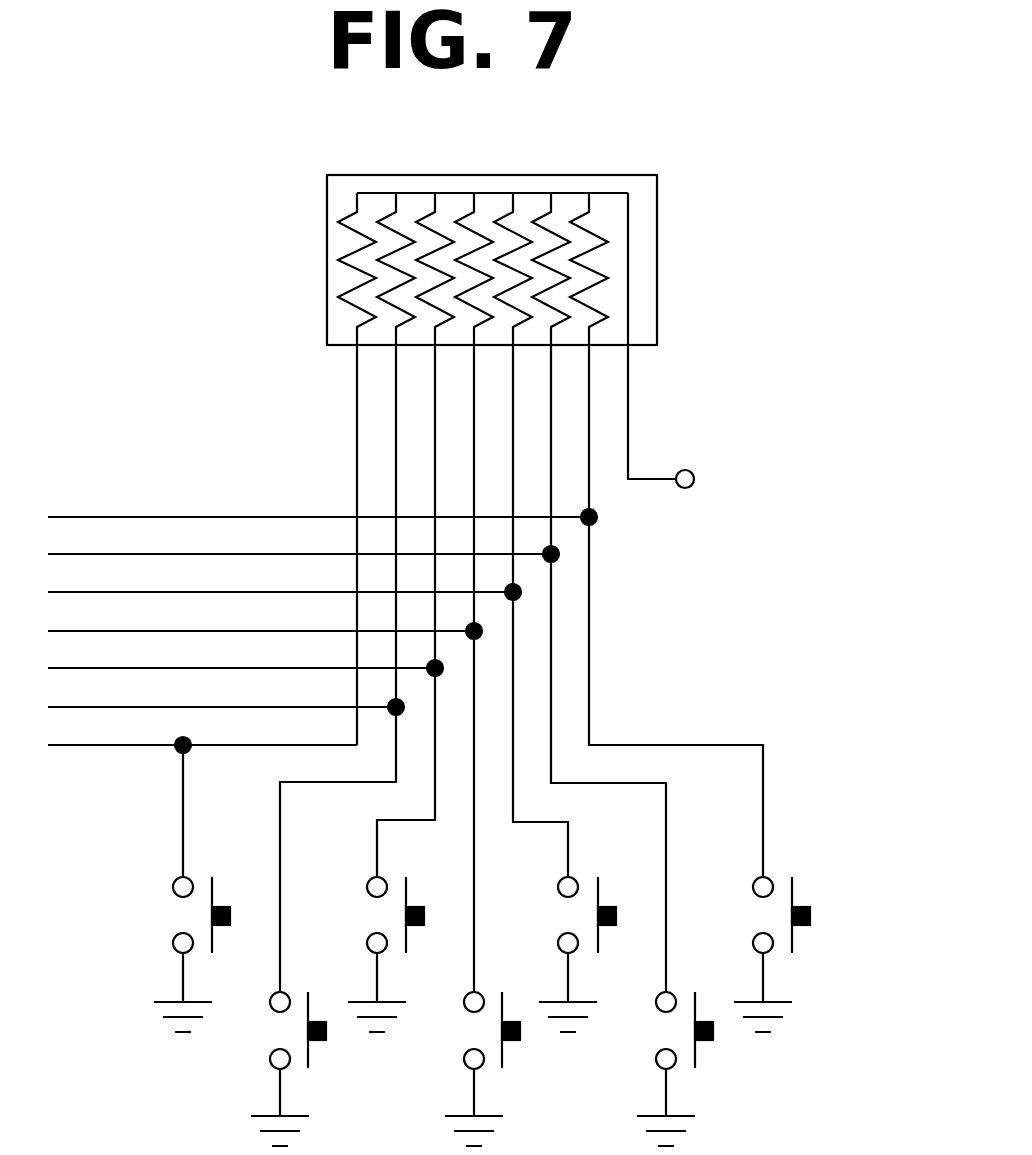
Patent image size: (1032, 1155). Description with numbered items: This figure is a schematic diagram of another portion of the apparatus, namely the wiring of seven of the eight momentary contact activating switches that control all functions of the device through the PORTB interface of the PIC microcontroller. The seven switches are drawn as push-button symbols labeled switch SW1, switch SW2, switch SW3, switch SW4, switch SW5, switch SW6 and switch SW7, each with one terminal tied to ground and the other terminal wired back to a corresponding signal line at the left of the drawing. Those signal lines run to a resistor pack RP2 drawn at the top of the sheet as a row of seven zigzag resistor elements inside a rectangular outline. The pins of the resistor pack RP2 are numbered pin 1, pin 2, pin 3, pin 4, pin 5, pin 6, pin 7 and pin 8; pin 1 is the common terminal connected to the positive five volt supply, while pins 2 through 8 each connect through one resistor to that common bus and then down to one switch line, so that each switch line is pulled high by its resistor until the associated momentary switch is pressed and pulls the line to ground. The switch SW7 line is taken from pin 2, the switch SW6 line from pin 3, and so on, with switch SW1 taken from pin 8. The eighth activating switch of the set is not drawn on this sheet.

The resistor pack pin 1 (common, +5V) 1 is at (703, 341).
The resistor pack pin 2 is at (594, 355).
The resistor pack pin 3 is at (556, 373).
The resistor pack pin 4 is at (518, 392).
The resistor pack pin 5 is at (479, 412).
The resistor pack pin 6 is at (440, 430).
The resistor pack pin 7 is at (402, 450).
The resistor pack pin 8 is at (362, 469).
The 47K pull-up resistor pack RP2 is at (495, 242).
The momentary contact switch SW1 is at (202, 872).
The momentary contact switch SW2 is at (226, 910).
The momentary contact switch SW3 is at (254, 833).
The momentary contact switch SW4 is at (303, 872).
The momentary contact switch SW5 is at (350, 795).
The momentary contact switch SW6 is at (400, 833).
The momentary contact switch SW7 is at (447, 758).